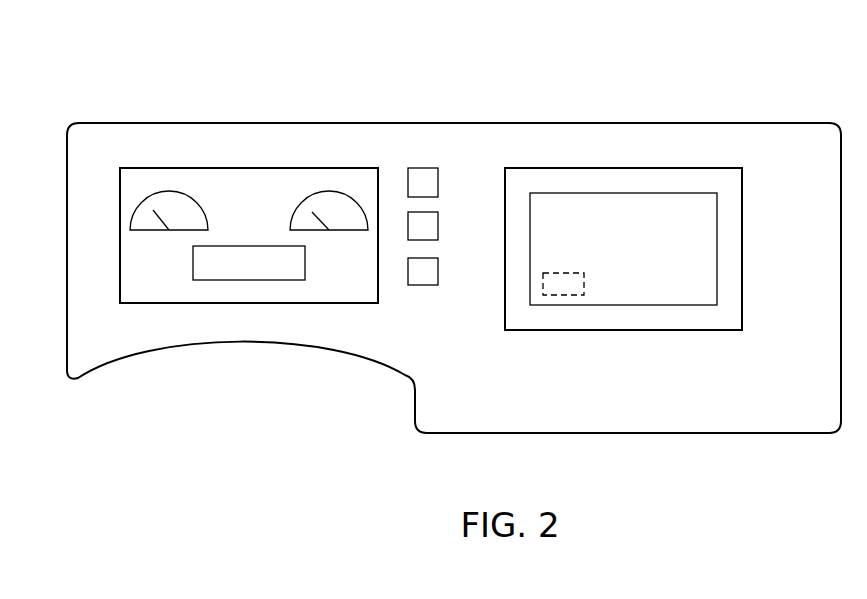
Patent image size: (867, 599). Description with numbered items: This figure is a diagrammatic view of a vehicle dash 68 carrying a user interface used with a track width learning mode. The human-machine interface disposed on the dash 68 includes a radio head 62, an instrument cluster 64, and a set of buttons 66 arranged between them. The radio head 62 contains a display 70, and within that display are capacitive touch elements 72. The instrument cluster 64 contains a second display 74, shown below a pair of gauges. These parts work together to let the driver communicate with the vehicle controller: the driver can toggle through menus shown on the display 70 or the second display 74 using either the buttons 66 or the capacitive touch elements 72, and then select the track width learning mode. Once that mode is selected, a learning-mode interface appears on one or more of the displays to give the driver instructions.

The radio head 62 is at (623, 167).
The instrument cluster 64 is at (243, 165).
The buttons 66 is at (423, 167).
The dash 68 is at (782, 140).
The display 70 is at (570, 192).
The capacitive touch elements 72 is at (562, 286).
The second display 74 is at (245, 304).